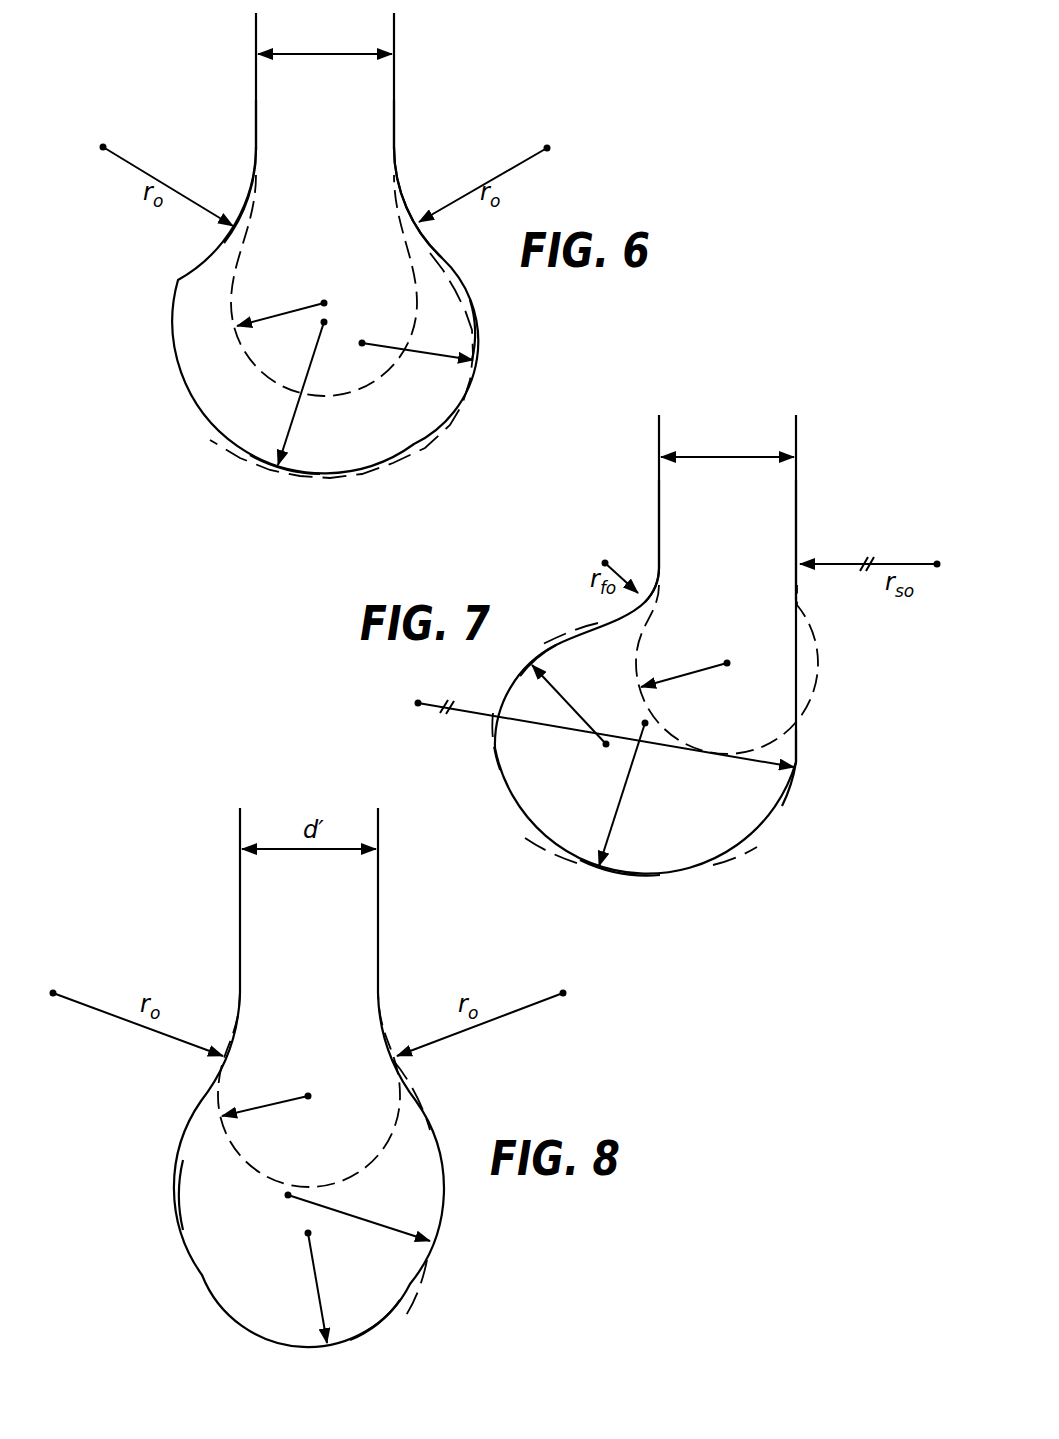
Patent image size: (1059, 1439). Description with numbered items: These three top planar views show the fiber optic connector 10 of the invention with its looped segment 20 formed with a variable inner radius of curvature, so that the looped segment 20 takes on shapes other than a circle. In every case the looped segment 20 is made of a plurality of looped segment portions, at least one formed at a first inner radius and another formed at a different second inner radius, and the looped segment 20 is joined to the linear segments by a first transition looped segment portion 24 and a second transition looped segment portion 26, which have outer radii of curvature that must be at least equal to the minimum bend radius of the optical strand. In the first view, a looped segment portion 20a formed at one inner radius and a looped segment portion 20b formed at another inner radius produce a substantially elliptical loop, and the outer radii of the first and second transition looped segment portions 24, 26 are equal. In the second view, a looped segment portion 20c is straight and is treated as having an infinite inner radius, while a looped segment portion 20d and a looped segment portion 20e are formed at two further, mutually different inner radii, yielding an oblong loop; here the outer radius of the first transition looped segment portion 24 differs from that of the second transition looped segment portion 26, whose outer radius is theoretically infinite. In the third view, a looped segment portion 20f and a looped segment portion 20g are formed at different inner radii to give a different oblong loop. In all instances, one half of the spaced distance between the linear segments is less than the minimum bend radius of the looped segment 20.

In FIG. 6, the fiber optic connector 10 is at (443, 109).
In FIG. 7, the fiber optic connector 10 is at (832, 486).
In FIG. 6, the looped segment 20 is at (400, 457).
In FIG. 7, the looped segment 20 is at (735, 848).
In FIG. 8, the looped segment 20 is at (432, 1257).
In FIG. 6, the looped segment portion 20a is at (508, 322).
In FIG. 6, the looped segment portion 20b is at (290, 470).
In FIG. 7, the looped segment portion 20c is at (797, 752).
In FIG. 7, the looped segment portion 20d is at (618, 877).
In FIG. 7, the looped segment portion 20e is at (545, 648).
In FIG. 8, the looped segment portion 20f is at (372, 1330).
In FIG. 8, the looped segment portion 20g is at (177, 1195).
In FIG. 6, the first transition looped segment portion 24 is at (237, 218).
In FIG. 7, the first transition looped segment portion 24 is at (658, 585).
In FIG. 6, the second transition looped segment portion 26 is at (405, 207).
In FIG. 7, the second transition looped segment portion 26 is at (798, 557).